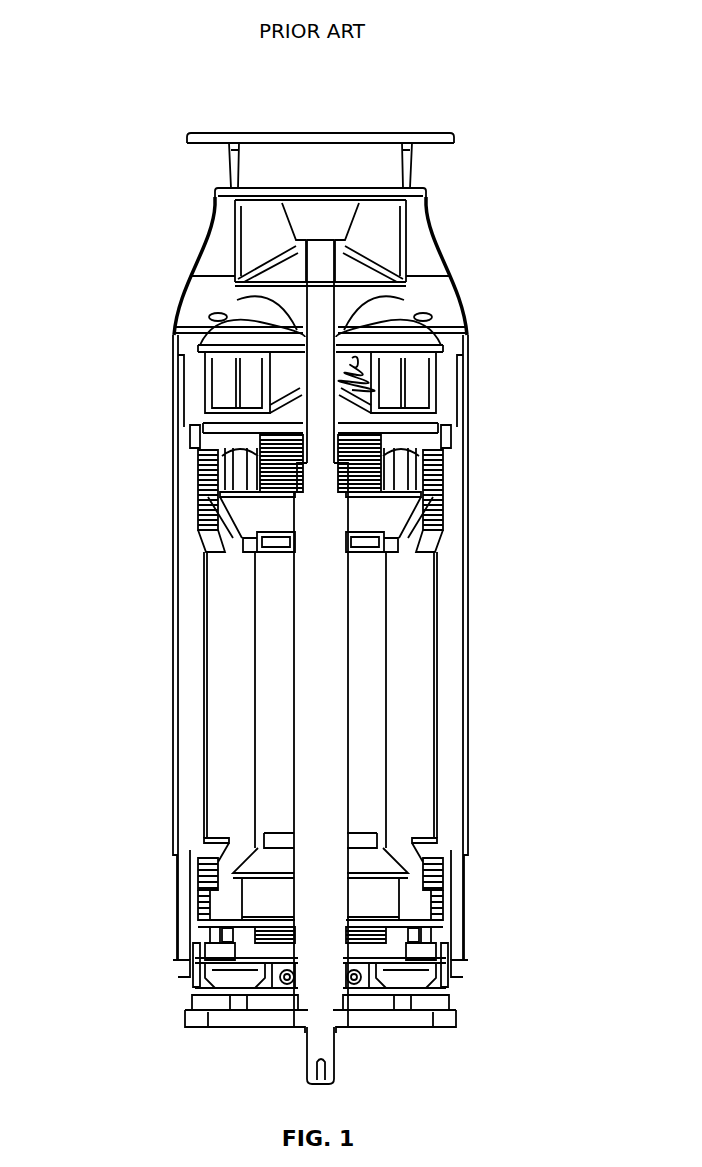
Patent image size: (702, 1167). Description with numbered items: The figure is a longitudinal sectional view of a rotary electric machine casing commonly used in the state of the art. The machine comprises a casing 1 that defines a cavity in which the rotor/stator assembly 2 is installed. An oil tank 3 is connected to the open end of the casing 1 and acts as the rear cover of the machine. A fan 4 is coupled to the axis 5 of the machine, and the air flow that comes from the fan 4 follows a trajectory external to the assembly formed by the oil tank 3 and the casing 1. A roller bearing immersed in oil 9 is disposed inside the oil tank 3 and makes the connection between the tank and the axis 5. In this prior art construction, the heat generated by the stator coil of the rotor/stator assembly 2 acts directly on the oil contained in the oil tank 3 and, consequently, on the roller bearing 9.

The casing 1 is at (188, 706).
The rotor/stator assembly 2 is at (430, 655).
The oil tank 3 is at (186, 403).
The fan 4 is at (252, 242).
The axis 5 is at (315, 338).
The roller bearing immersed in oil 9 is at (370, 372).